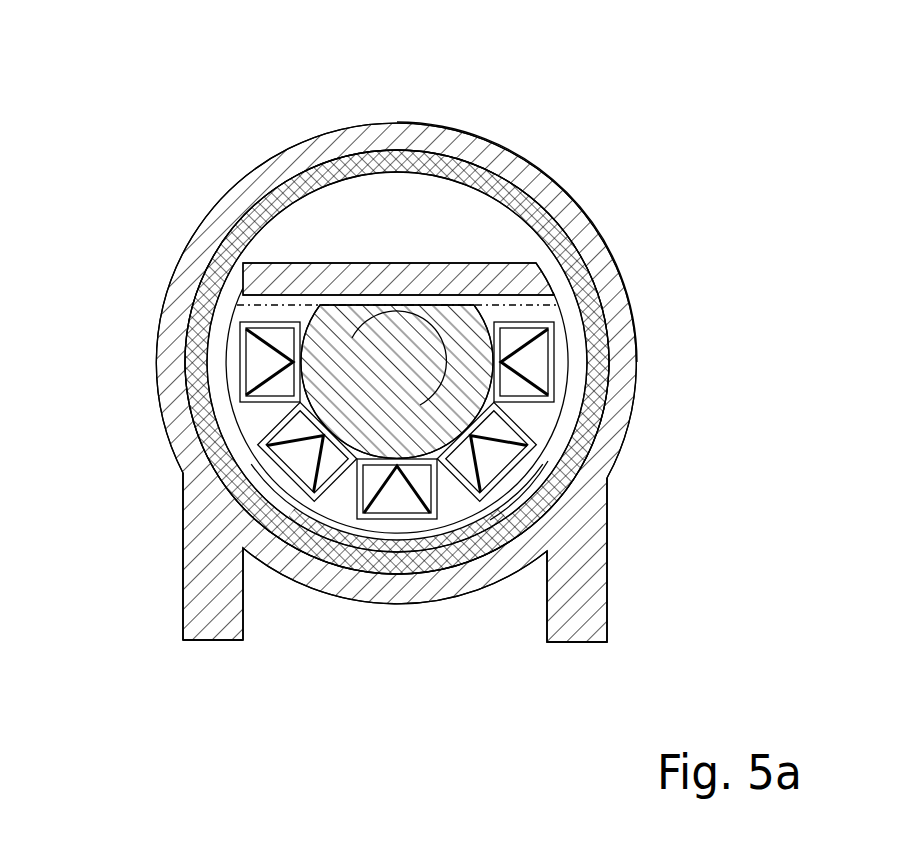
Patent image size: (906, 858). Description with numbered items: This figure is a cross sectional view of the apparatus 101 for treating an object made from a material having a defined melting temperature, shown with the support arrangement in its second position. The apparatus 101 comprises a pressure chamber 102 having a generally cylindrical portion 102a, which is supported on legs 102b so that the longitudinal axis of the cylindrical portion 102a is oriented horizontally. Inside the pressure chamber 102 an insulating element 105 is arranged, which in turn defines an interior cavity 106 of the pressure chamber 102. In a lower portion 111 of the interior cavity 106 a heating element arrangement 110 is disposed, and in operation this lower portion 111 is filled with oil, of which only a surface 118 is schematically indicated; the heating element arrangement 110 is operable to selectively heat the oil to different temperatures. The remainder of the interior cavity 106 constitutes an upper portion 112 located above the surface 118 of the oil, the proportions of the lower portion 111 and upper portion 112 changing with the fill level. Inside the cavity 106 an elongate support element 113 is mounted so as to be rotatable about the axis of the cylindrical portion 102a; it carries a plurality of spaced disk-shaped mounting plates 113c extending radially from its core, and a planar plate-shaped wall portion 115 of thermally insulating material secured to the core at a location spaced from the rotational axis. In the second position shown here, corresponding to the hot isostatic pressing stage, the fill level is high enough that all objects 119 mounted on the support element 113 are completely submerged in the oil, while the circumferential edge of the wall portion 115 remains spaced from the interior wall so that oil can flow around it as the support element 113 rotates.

The apparatus 101 is at (167, 173).
The pressure chamber 102 is at (383, 112).
The cylindrical portion 102a is at (623, 292).
The legs 102b is at (186, 597).
The insulating element 105 is at (277, 203).
The interior cavity 106 is at (580, 351).
The heating element arrangement 110 is at (416, 553).
The lower portion 111 is at (548, 461).
The upper portion 112 is at (518, 240).
The support element 113 is at (390, 370).
The mounting plates 113c is at (250, 422).
The wall portion 115 is at (237, 283).
The surface of the oil 118 is at (160, 353).
The objects 119 is at (156, 362).